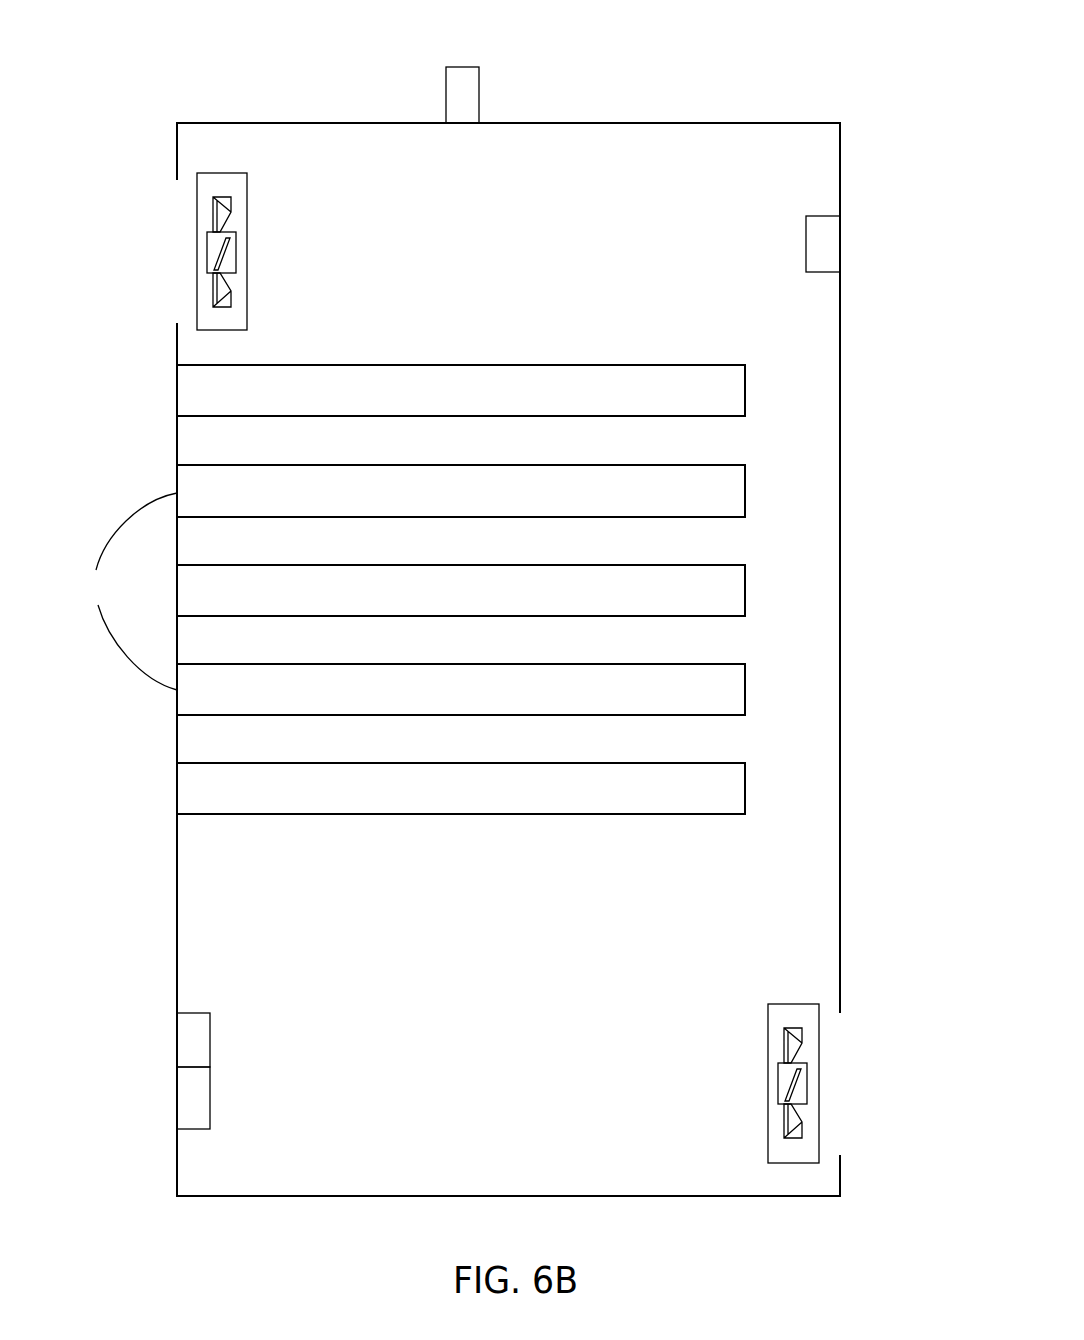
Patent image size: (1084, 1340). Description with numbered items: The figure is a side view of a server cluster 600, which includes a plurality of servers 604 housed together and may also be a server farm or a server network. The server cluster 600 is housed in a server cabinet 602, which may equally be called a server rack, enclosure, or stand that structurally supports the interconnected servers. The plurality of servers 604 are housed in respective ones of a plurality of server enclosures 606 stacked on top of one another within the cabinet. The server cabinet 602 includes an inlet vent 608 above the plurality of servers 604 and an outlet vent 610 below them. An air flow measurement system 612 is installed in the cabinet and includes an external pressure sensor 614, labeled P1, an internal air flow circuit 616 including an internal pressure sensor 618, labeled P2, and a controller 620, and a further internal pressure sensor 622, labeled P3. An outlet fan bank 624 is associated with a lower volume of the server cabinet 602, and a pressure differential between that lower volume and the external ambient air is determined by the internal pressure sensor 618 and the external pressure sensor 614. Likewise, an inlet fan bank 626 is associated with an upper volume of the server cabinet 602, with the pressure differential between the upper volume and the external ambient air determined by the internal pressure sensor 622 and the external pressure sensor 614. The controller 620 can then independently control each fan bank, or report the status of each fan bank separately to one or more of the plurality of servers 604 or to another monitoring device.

The server cluster 600 is at (886, 110).
The server cabinet 602 is at (676, 122).
The plurality of servers 604 is at (755, 686).
The plurality of server enclosures 606 is at (177, 592).
The inlet vent 608 is at (170, 212).
The outlet vent 610 is at (850, 1047).
The air flow measurement system 612 is at (512, 65).
The external pressure sensor (P1) 614 is at (446, 92).
The internal air flow circuit 616 is at (152, 1005).
The internal pressure sensor (P2) 618 is at (192, 1012).
The controller 620 is at (195, 1130).
The internal pressure sensor (P3) 622 is at (822, 216).
The outlet fan bank 624 is at (793, 1003).
The inlet fan bank 626 is at (223, 172).